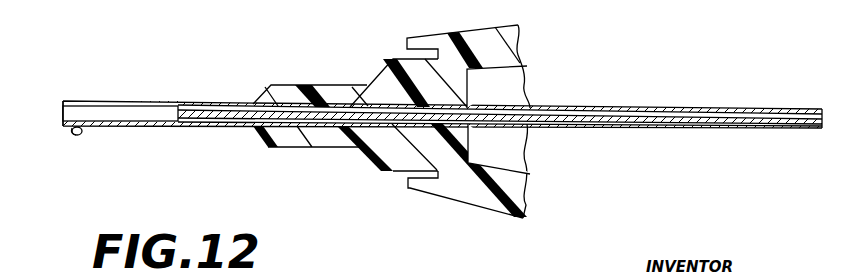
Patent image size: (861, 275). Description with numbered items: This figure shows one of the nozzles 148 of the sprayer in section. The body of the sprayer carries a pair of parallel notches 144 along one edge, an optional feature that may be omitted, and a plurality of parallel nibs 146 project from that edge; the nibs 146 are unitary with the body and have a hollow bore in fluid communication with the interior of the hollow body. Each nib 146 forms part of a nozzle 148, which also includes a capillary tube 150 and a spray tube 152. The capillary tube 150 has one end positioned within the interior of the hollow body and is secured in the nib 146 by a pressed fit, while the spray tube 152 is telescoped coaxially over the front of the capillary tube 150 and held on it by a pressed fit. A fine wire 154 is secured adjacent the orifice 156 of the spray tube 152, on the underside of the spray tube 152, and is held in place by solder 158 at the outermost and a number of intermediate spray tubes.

The notches 144 is at (404, 49).
The nibs 146 is at (331, 84).
The nozzles 148 is at (252, 99).
The capillary tubes 150 is at (668, 128).
The spray tubes 152 is at (158, 127).
The fine wire 154 is at (79, 132).
The orifices 156 is at (58, 125).
The solder 158 is at (72, 128).